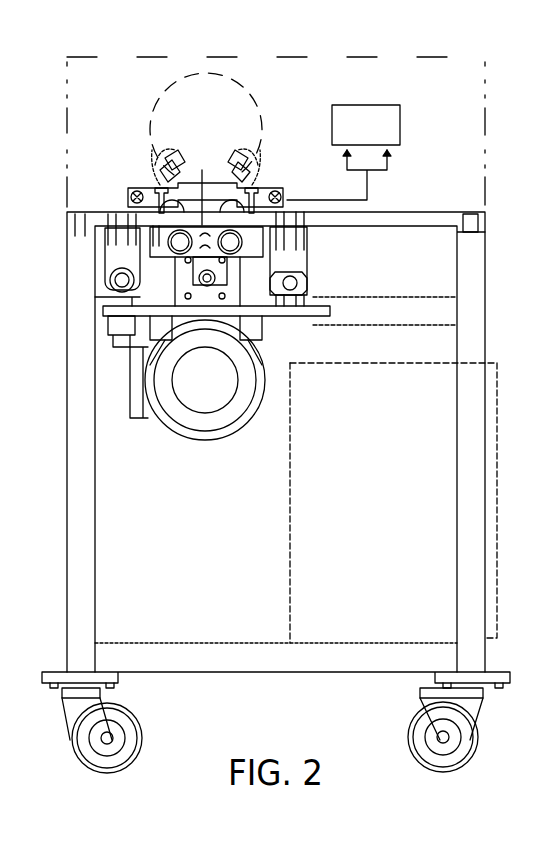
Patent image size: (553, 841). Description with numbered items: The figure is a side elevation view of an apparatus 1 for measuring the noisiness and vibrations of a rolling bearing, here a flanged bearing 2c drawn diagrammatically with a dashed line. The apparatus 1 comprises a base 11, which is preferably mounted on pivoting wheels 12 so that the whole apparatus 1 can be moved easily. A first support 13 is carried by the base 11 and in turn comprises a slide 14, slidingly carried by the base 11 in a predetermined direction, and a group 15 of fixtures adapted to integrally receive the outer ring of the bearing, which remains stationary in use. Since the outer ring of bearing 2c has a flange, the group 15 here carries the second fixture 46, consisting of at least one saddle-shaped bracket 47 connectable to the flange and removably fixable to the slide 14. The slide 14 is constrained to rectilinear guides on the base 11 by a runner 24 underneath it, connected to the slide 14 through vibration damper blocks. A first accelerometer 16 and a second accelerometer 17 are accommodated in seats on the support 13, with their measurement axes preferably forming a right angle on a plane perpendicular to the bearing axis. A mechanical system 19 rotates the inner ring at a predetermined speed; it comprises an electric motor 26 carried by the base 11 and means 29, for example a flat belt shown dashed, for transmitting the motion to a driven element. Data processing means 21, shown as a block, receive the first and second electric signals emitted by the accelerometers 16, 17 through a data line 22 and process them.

The apparatus 1 is at (492, 68).
The bearing 2c is at (258, 98).
The base 11 is at (468, 456).
The pivoting wheels 12 is at (142, 736).
The first support 13 is at (132, 178).
The slide 14 is at (258, 195).
The group of fixtures 15 is at (260, 152).
The first accelerometer 16 is at (176, 154).
The second accelerometer 17 is at (236, 160).
The mechanical system 19 is at (180, 440).
The data processing means 21 is at (398, 118).
The data line 22 is at (370, 185).
The runner 24 is at (300, 275).
The electric motor 26 is at (228, 420).
The means for transmitting the motion 29 is at (266, 360).
The second fixture 46 is at (148, 147).
The saddle-shaped bracket 47 is at (142, 182).